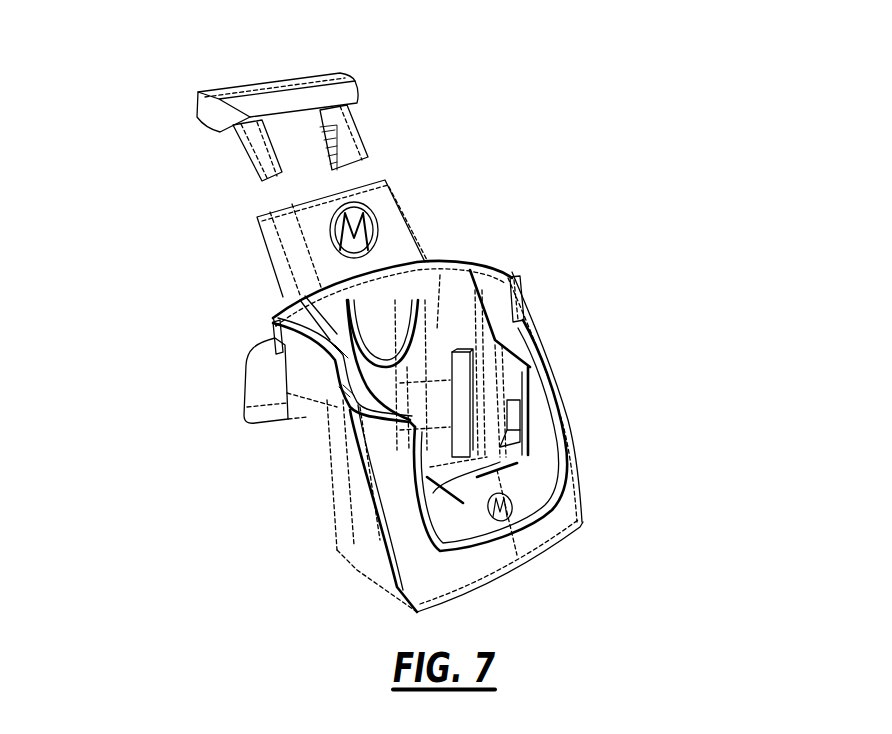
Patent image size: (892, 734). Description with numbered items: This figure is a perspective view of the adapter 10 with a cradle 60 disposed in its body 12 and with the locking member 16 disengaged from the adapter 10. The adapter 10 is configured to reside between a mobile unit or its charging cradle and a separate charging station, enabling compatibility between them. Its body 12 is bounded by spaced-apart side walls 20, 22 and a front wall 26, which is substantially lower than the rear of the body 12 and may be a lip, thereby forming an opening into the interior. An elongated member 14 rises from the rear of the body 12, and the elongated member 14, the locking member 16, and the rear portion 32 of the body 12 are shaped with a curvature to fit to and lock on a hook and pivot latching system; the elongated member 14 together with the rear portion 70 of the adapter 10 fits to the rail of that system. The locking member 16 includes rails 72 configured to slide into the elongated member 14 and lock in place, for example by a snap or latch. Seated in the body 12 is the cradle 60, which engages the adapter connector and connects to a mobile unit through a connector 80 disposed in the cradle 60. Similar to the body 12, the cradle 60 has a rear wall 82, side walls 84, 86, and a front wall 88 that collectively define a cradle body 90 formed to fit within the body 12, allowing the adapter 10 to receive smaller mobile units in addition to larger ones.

The adapter 10 is at (585, 229).
The body 12 is at (482, 251).
The elongated member 14 is at (408, 205).
The locking member 16 is at (197, 105).
The side wall 20 is at (523, 338).
The side wall 22 is at (343, 547).
The front wall 26 is at (578, 530).
The rear portion 32 is at (325, 470).
The cradle 60 is at (536, 470).
The rear portion 70 is at (247, 393).
The rails 72 is at (247, 152).
The connector 80 is at (490, 443).
The rear wall 82 is at (410, 362).
The side wall 84 is at (362, 362).
The side wall 86 is at (493, 337).
The front wall 88 is at (513, 430).
The cradle body 90 is at (436, 332).